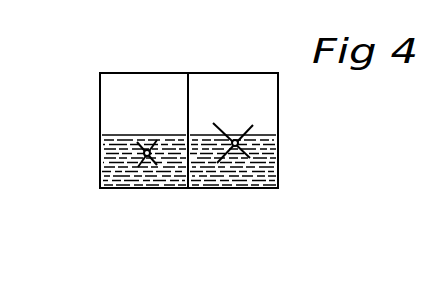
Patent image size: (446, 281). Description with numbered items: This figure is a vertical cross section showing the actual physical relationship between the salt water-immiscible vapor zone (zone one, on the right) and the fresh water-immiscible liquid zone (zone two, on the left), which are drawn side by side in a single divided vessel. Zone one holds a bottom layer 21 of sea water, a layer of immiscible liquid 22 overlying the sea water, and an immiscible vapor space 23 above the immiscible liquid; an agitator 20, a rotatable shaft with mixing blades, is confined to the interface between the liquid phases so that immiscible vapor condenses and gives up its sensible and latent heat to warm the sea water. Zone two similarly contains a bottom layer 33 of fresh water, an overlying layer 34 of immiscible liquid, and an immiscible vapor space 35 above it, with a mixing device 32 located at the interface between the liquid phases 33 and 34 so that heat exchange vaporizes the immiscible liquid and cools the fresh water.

The agitator 20 is at (252, 157).
The bottom layer of sea water 21 is at (278, 172).
The layer of immiscible liquid 22 is at (266, 140).
The immiscible vapor space 23 is at (278, 113).
The mixing device 32 is at (143, 158).
The bottom layer of liquid aqueous phase 33 is at (117, 173).
The overlying layer of immiscible liquid 34 is at (116, 140).
The immiscible vapor space 35 is at (118, 116).